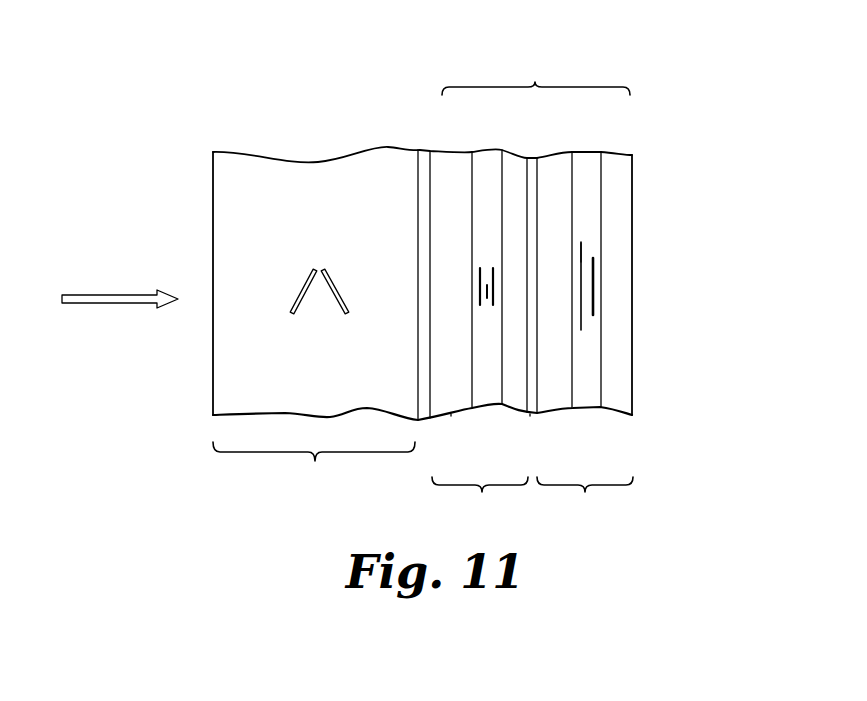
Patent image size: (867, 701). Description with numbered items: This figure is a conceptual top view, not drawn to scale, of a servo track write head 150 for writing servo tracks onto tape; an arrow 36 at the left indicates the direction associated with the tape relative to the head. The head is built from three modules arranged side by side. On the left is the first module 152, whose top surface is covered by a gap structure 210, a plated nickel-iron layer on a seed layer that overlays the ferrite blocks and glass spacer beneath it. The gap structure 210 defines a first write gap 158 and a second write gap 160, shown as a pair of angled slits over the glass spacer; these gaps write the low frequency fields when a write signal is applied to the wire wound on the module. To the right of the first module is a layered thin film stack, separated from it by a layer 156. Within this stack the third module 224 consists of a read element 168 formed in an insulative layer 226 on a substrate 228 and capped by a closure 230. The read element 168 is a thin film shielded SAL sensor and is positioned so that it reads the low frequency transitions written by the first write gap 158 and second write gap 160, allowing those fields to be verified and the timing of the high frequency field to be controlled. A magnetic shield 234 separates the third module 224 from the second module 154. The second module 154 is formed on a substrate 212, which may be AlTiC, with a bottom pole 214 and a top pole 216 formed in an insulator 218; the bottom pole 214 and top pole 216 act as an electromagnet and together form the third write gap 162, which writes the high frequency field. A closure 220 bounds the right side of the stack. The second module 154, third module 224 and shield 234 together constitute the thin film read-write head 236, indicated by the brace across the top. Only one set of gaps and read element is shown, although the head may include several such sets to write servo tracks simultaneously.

The servo track write head 150 is at (631, 58).
The gap structure 210 is at (252, 163).
The tape travel direction 36 is at (108, 292).
The first write gap 158 is at (317, 300).
The second write gap 160 is at (330, 300).
The first module 152 is at (314, 466).
The insulating layer 156 is at (423, 150).
The insulative layer 226 is at (483, 150).
The substrate 228 is at (517, 155).
The substrate 212 is at (560, 150).
The insulator 218 is at (587, 150).
The thin film read-write head 236 is at (536, 74).
The closure 220 is at (632, 173).
The bottom pole 214 is at (582, 243).
The top pole 216 is at (593, 278).
The closure 230 is at (452, 414).
The read element 168 is at (482, 330).
The magnetic shield 234 is at (530, 415).
The third write gap 162 is at (592, 348).
The third module 224 is at (480, 499).
The second module 154 is at (585, 499).